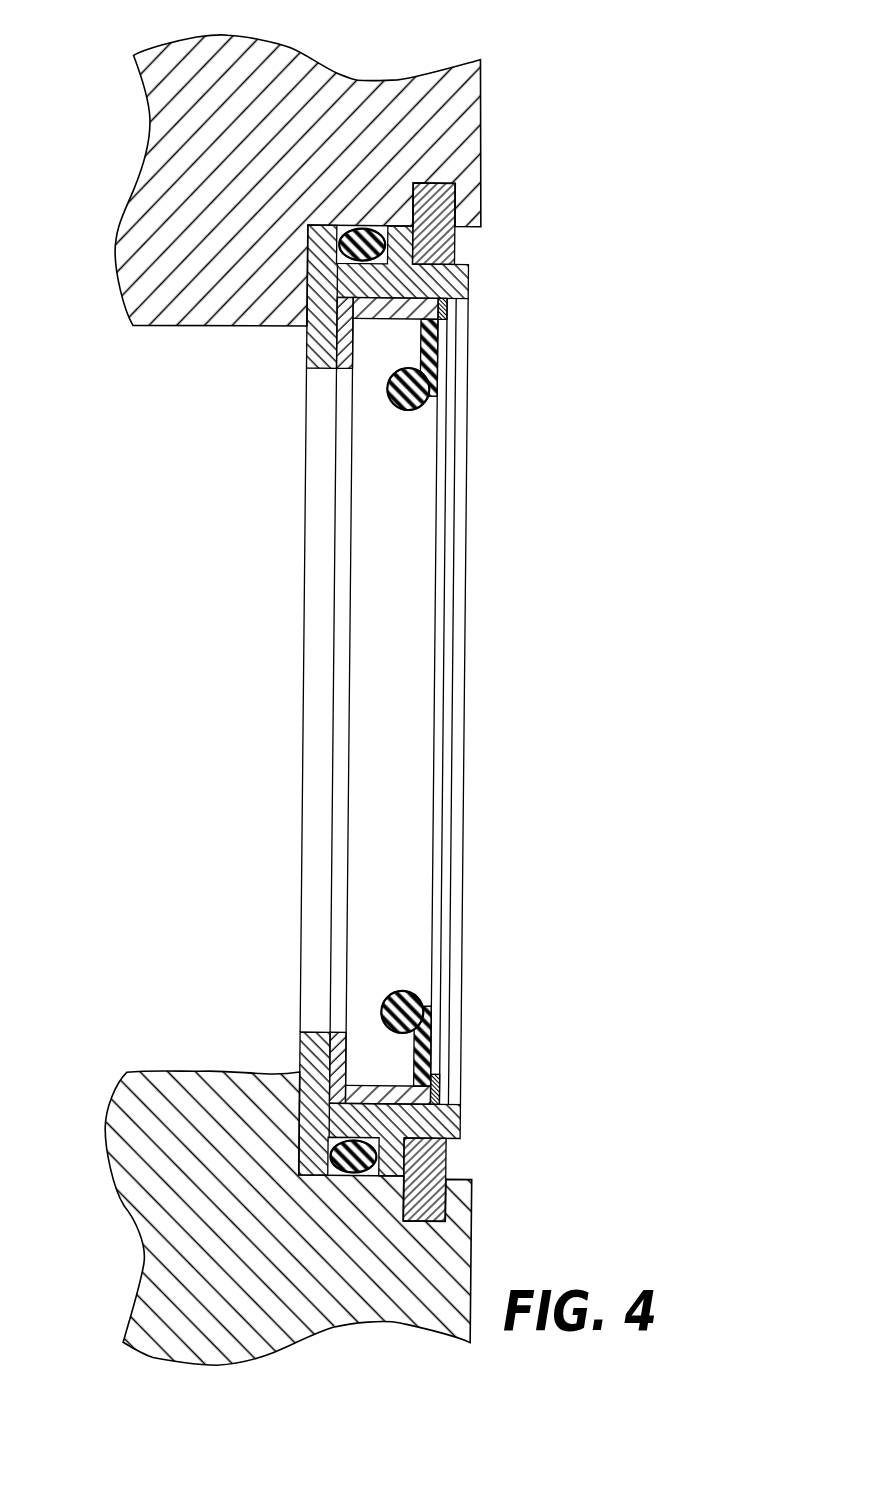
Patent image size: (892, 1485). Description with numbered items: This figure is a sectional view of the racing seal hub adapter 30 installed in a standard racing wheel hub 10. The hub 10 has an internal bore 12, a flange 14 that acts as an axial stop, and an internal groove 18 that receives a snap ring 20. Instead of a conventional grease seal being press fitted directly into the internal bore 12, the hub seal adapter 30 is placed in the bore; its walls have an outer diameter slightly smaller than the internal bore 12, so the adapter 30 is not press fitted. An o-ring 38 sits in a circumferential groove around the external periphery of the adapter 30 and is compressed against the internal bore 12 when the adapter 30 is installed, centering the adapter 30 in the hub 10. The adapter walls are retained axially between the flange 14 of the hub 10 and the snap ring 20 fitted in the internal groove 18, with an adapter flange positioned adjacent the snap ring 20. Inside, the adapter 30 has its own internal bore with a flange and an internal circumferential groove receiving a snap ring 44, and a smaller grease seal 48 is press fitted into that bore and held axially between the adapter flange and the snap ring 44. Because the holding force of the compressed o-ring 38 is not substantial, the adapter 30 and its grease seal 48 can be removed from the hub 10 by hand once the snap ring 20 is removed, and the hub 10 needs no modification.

The hub 10 is at (452, 103).
The internal bore 12 is at (372, 1108).
The flange 14 is at (315, 338).
The internal groove 18 is at (430, 180).
The snap ring 20 is at (428, 230).
The hub seal adapter 30 is at (489, 325).
The o-ring 38 is at (343, 211).
The snap ring 44 is at (438, 702).
The grease seal 48 is at (340, 575).